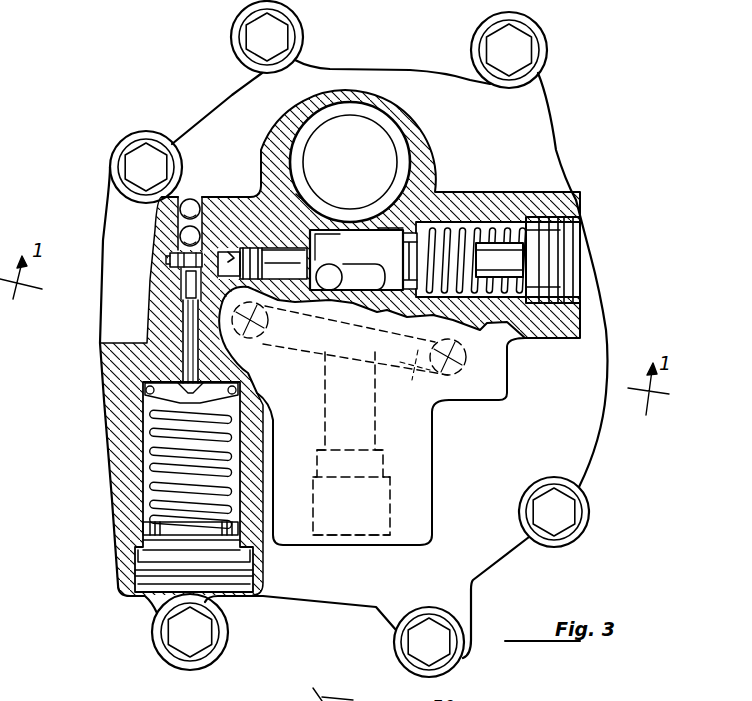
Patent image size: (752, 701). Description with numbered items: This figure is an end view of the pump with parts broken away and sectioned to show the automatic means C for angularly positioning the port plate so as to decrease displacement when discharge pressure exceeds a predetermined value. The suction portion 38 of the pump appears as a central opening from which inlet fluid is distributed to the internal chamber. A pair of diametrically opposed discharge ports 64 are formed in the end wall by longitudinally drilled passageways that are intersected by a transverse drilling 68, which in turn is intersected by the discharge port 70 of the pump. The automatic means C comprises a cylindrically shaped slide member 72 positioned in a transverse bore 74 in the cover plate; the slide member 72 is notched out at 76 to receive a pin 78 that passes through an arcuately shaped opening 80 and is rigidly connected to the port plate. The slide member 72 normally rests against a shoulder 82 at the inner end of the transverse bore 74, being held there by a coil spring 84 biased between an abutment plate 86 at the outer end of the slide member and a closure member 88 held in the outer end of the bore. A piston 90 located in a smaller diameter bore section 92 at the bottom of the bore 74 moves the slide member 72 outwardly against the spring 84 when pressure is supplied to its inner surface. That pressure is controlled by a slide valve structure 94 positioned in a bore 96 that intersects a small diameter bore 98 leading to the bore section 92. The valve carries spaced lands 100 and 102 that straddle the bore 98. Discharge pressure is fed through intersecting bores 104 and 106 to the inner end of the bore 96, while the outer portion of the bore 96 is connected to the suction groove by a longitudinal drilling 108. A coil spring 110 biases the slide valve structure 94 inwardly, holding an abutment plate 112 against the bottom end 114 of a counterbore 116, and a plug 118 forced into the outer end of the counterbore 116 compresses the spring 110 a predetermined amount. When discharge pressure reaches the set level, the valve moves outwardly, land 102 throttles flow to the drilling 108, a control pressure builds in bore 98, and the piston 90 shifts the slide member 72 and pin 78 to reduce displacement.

The suction portion 38 is at (363, 117).
The discharge ports 64 is at (266, 340).
The transverse drilling 68 is at (418, 358).
The discharge port 70 is at (372, 436).
The slide member 72 is at (365, 273).
The transverse bore 74 is at (423, 227).
The notch 76 is at (333, 262).
The pin 78 is at (330, 290).
The arcuately shaped opening 80 is at (380, 226).
The shoulder 82 is at (296, 194).
The coil spring 84 is at (508, 227).
The abutment plate 86 is at (433, 230).
The closure member 88 is at (564, 267).
The piston 90 is at (288, 253).
The smaller diameter bore section 92 is at (242, 247).
The slide valve structure 94 is at (187, 325).
The bore 96 is at (182, 376).
The small diameter bore 98 is at (172, 258).
The land 100 is at (170, 263).
The land 102 is at (168, 265).
The bore 104 is at (351, 443).
The bore 106 is at (189, 212).
The longitudinal drilling 108 is at (182, 285).
The coil spring 110 is at (143, 484).
The abutment plate 112 is at (143, 387).
The bottom end of counterbore 114 is at (147, 418).
The counterbore 116 is at (143, 505).
The plug 118 is at (173, 553).
The automatic means C is at (183, 357).